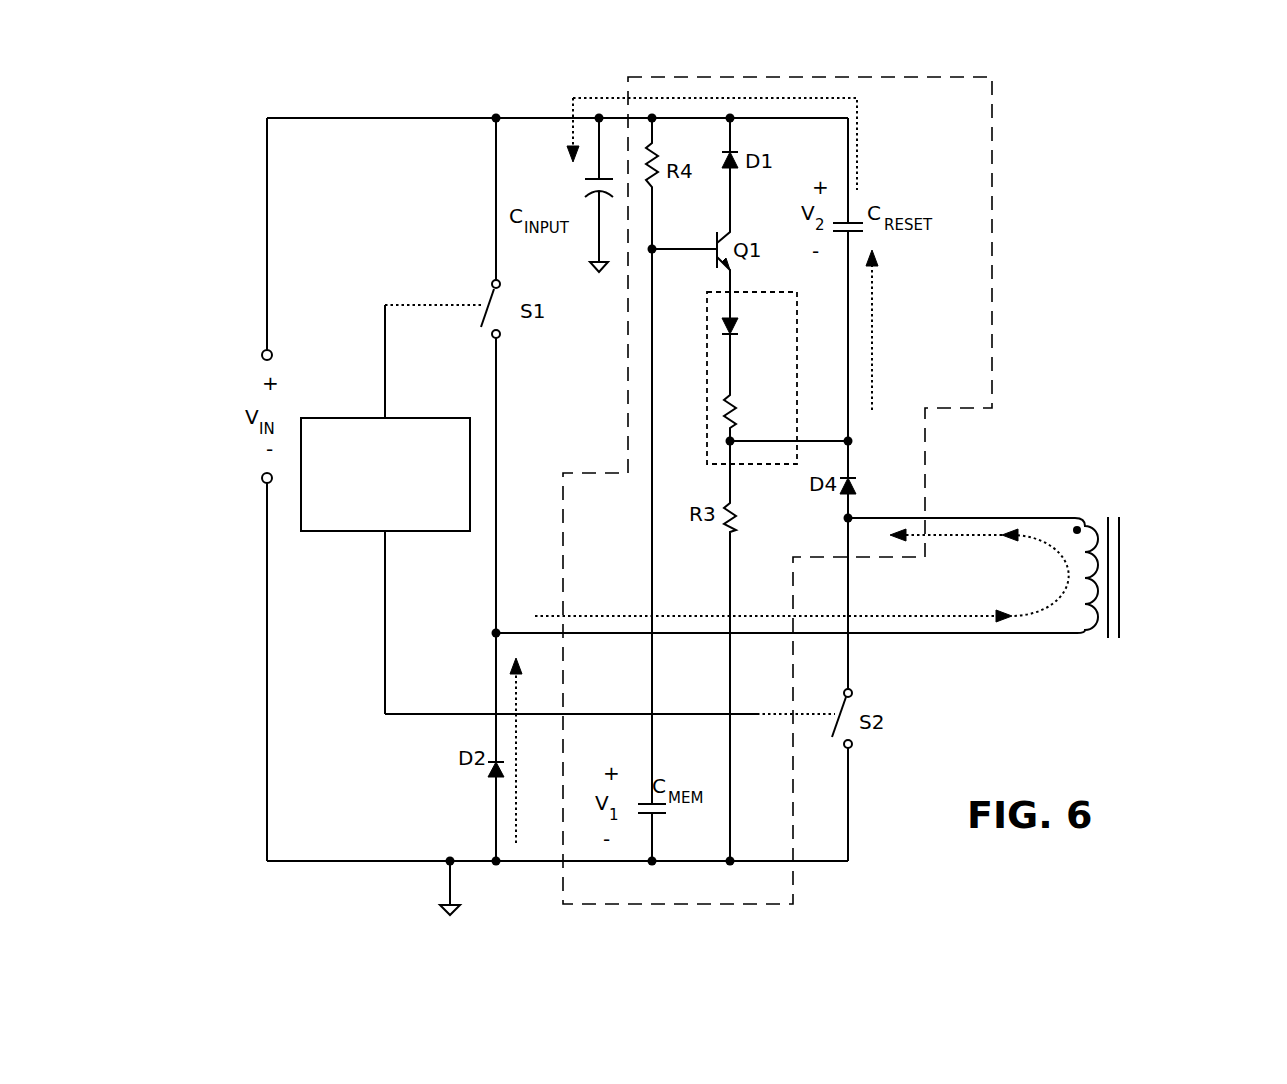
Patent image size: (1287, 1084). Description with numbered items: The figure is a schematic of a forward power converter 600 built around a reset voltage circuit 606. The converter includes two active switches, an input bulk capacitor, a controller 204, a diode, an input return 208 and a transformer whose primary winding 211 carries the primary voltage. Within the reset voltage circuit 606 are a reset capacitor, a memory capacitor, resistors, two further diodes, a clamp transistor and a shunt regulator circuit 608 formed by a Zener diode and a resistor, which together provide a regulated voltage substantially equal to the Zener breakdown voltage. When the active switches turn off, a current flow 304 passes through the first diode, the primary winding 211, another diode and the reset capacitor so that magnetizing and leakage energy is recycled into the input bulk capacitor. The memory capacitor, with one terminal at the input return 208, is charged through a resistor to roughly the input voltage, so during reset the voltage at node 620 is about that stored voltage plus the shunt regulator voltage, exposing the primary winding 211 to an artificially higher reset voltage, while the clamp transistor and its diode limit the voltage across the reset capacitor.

The forward power converter 600 is at (1215, 127).
The reset voltage circuit 606 is at (998, 193).
The shunt regulator circuit 608 is at (804, 353).
The node 620 is at (860, 441).
The current flow 304 is at (868, 131).
The input return 208 is at (465, 892).
The controller 204 is at (568, 509).
The primary winding 211 is at (1066, 648).